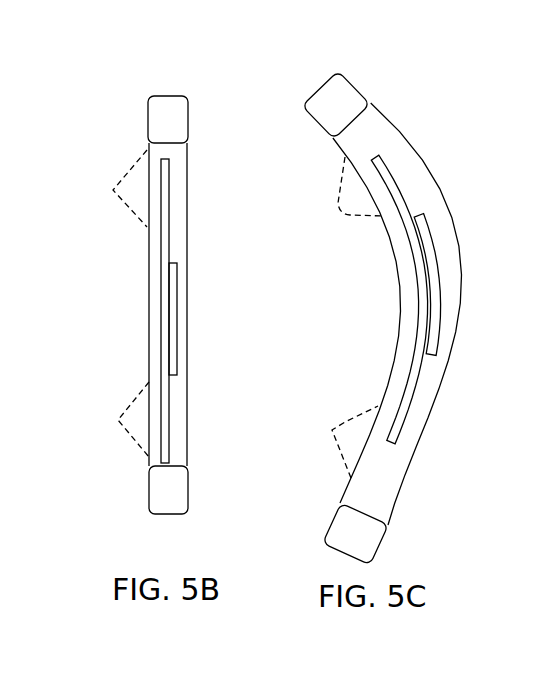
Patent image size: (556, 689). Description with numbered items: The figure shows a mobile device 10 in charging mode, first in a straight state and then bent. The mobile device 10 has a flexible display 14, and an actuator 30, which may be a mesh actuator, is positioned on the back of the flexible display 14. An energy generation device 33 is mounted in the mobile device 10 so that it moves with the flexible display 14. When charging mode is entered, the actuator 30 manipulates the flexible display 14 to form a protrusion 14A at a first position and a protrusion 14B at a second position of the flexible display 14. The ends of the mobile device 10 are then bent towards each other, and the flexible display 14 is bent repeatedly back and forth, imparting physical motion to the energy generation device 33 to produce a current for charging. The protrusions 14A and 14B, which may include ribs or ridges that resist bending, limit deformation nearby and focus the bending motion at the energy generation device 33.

In FIG. 5B, the mobile device 10 is at (174, 68).
In FIG. 5C, the flexible display 14 is at (429, 318).
In FIG. 5B, the protrusion 14A is at (110, 190).
In FIG. 5C, the protrusion 14A is at (340, 183).
In FIG. 5B, the protrusion 14B is at (117, 420).
In FIG. 5C, the protrusion 14B is at (345, 422).
In FIG. 5B, the actuator 30 is at (167, 452).
In FIG. 5C, the actuator 30 is at (387, 172).
In FIG. 5B, the energy generation device 33 is at (177, 313).
In FIG. 5C, the energy generation device 33 is at (432, 247).